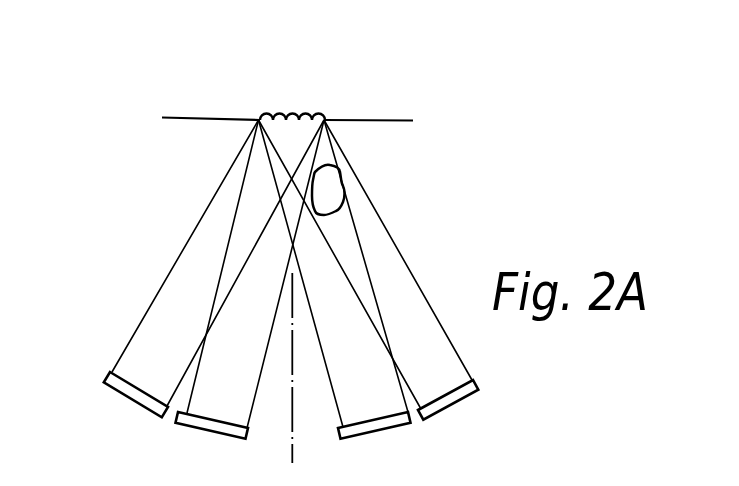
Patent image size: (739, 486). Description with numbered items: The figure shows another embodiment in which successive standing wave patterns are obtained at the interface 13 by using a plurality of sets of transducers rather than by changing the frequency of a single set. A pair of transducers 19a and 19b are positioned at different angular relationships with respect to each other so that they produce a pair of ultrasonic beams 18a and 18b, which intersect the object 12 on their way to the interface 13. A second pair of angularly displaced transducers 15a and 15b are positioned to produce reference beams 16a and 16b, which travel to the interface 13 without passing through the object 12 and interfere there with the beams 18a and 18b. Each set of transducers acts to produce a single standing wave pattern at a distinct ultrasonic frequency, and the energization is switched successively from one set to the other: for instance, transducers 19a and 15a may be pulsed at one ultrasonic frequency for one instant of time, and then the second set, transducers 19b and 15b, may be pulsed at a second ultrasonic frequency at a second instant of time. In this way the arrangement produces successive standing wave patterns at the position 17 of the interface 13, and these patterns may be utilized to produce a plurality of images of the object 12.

The object 12 is at (342, 188).
The interface 13 is at (214, 117).
The transducer 15a is at (128, 398).
The transducer 15b is at (194, 427).
The reference beam 16a is at (166, 282).
The reference beam 16b is at (197, 371).
The position of the interface 17 is at (302, 112).
The ultrasonic beam 18a is at (396, 244).
The ultrasonic beam 18b is at (400, 389).
The transducer 19a is at (479, 391).
The transducer 19b is at (402, 425).